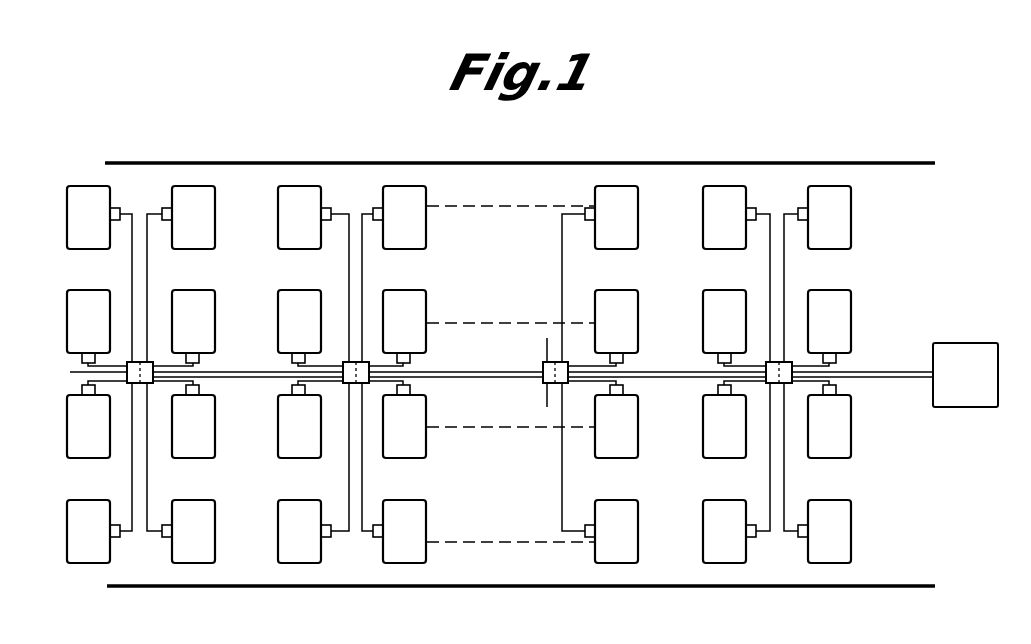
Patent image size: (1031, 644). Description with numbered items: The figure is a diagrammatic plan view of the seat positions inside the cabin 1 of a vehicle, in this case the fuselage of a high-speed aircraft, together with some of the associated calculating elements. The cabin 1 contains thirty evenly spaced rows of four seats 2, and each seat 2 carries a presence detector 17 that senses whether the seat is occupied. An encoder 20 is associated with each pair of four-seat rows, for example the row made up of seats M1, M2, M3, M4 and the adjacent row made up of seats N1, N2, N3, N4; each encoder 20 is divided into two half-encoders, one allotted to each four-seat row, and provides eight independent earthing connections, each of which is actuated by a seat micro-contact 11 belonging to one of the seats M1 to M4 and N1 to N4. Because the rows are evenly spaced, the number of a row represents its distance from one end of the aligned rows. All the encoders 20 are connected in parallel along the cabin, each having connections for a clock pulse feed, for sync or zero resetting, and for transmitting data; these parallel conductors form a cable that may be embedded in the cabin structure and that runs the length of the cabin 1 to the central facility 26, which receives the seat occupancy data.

The cabin 1 is at (585, 592).
The seat 2 is at (448, 370).
The seat micro-contact 11 is at (406, 364).
The presence detector 17 is at (164, 208).
The encoder 20 is at (350, 385).
The central facility 26 is at (958, 414).
The seat of row M M1 is at (278, 215).
The seat of row M M2 is at (278, 330).
The seat of row M M3 is at (278, 432).
The seat of row M M4 is at (278, 532).
The seat of row N N1 is at (430, 243).
The seat of row N N2 is at (428, 312).
The seat of row N N3 is at (428, 422).
The seat of row N N4 is at (430, 528).